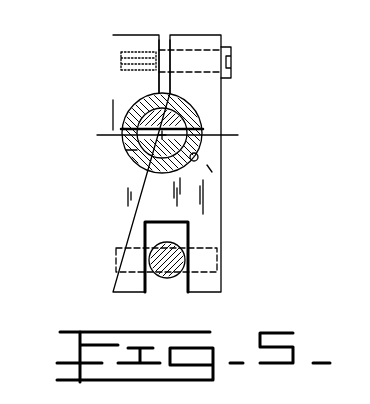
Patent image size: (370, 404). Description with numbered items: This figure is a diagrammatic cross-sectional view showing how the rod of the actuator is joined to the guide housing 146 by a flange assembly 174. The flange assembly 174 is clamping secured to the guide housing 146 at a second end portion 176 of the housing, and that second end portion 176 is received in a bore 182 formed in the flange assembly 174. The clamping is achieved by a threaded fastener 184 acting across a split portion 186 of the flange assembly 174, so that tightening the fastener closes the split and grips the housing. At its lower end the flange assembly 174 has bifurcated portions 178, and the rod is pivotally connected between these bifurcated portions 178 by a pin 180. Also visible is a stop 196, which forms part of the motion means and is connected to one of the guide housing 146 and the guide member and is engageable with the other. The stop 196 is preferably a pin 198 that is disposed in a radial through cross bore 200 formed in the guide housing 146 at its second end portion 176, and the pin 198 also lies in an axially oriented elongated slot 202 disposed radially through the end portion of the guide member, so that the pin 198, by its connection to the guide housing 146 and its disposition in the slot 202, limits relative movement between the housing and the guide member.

The guide housing 146 is at (200, 113).
The flange assembly 174 is at (104, 167).
The second end portion 176 is at (199, 95).
The bifurcated portions 178 is at (188, 222).
The pin 180 is at (112, 238).
The bore 182 is at (205, 163).
The threaded fastener 184 is at (232, 63).
The split portion 186 is at (163, 34).
The stop 196 is at (108, 119).
The pin 198 is at (121, 129).
The radial through cross bore 200 is at (198, 150).
The axially oriented elongated slot 202 is at (126, 150).